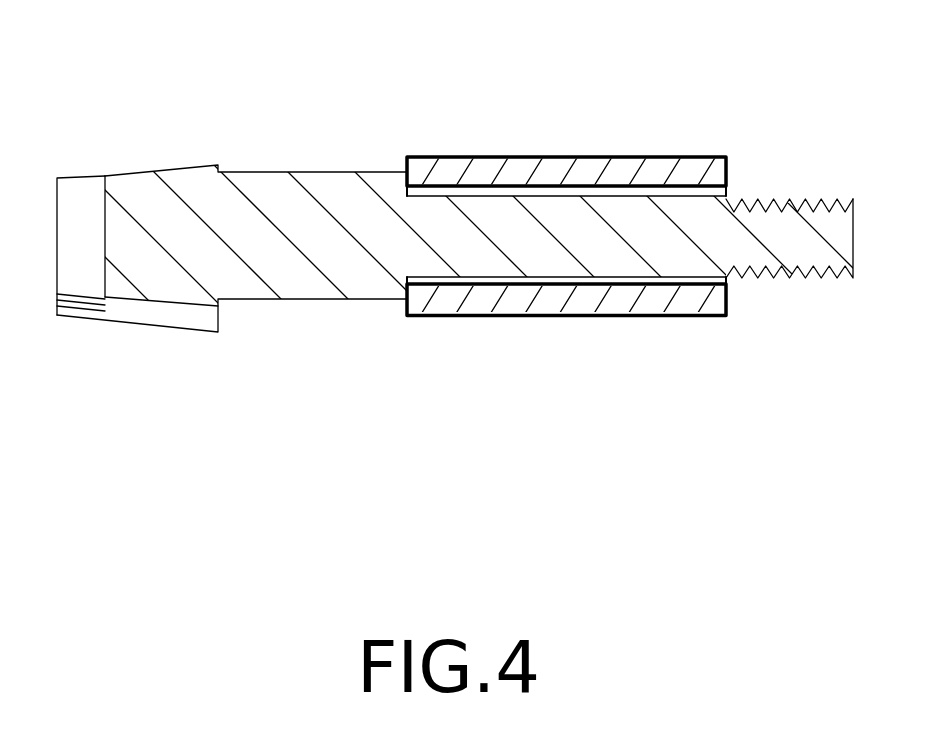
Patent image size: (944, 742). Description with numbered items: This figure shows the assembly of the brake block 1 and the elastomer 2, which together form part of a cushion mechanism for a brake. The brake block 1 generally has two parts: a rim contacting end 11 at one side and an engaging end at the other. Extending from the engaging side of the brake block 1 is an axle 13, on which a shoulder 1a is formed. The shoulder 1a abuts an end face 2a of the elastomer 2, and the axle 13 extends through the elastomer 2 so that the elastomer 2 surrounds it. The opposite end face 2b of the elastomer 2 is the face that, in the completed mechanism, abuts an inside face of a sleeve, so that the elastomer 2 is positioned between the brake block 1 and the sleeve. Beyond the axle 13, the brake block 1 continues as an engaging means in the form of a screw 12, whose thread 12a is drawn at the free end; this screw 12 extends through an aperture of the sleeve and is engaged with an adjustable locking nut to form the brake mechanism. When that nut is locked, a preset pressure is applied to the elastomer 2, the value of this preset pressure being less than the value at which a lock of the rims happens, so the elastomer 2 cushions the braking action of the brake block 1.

The brake block 1 is at (250, 170).
The shoulder 1a is at (412, 183).
The elastomer 2 is at (583, 157).
The end face of elastomer 2a is at (407, 163).
The end face of elastomer 2b is at (728, 167).
The rim contacting end 11 is at (73, 203).
The engaging means (screw) 12 is at (795, 255).
The thread 12a is at (797, 199).
The axle 13 is at (613, 265).